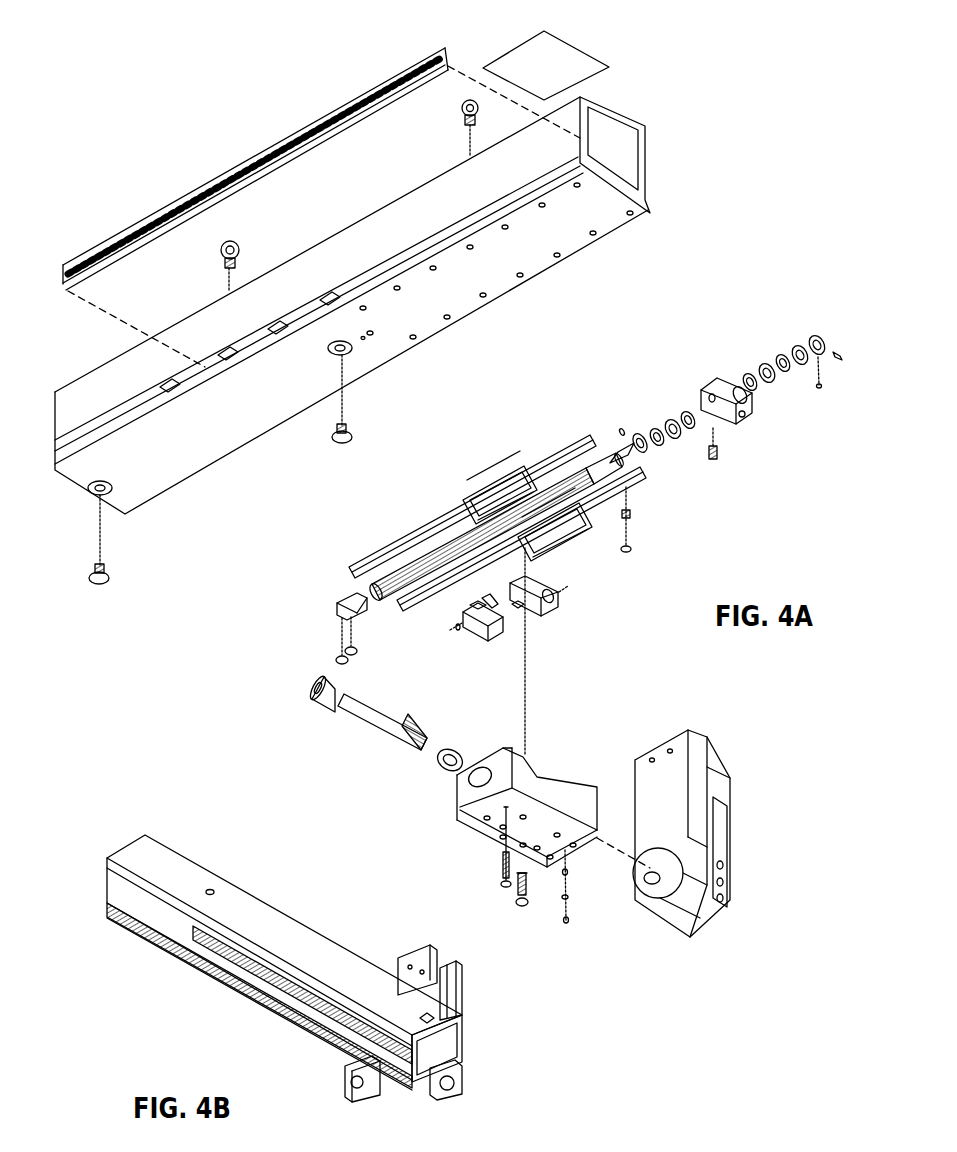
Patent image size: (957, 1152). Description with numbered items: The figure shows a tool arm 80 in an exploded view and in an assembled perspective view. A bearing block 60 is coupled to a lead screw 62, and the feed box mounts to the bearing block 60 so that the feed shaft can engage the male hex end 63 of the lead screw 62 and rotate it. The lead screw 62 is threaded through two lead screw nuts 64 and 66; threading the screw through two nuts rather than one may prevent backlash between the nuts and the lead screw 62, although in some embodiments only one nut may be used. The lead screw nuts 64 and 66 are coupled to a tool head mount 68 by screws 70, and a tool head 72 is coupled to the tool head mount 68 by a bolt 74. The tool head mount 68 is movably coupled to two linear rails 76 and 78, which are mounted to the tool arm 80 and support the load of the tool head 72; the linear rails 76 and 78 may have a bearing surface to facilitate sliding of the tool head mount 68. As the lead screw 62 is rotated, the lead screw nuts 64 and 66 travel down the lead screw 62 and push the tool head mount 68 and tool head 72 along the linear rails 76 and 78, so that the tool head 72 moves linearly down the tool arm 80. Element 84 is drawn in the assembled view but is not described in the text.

In FIG. 4A, the bearing block 60 is at (727, 400).
In FIG. 4B, the bearing block 60 is at (452, 1082).
In FIG. 4A, the lead screw 62 is at (580, 473).
In FIG. 4A, the male hex end 63 is at (615, 455).
In FIG. 4A, the lead screw nut 64 is at (484, 630).
In FIG. 4A, the lead screw nut 66 is at (537, 605).
In FIG. 4A, the tool head mount 68 is at (572, 800).
In FIG. 4B, the tool head mount 68 is at (360, 1078).
In FIG. 4A, the screws 70 is at (503, 878).
In FIG. 4A, the tool head 72 is at (673, 785).
In FIG. 4B, the tool head 72 is at (455, 990).
In FIG. 4A, the bolt 74 is at (358, 713).
In FIG. 4A, the linear rail 76 is at (442, 522).
In FIG. 4A, the linear rail 78 is at (430, 588).
In FIG. 4A, the tool arm 80 is at (550, 140).
In FIG. 4B, the tool arm 80 is at (153, 860).
In FIG. 4B, the bracket plate 84 is at (432, 960).